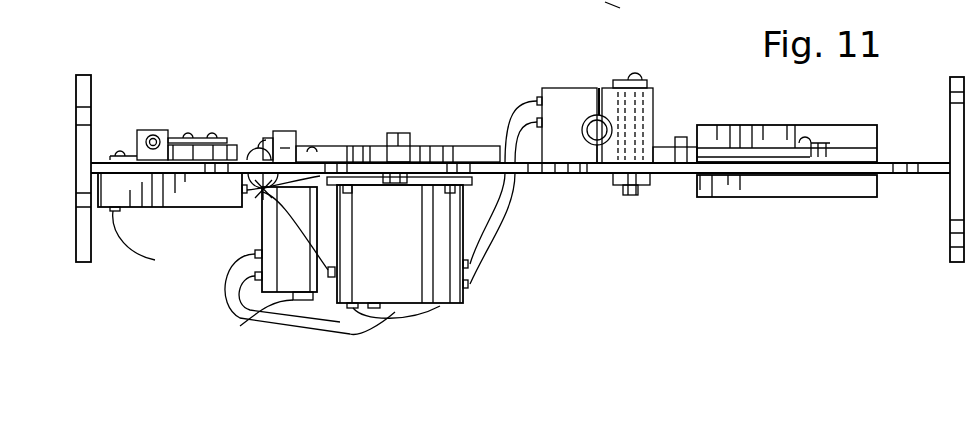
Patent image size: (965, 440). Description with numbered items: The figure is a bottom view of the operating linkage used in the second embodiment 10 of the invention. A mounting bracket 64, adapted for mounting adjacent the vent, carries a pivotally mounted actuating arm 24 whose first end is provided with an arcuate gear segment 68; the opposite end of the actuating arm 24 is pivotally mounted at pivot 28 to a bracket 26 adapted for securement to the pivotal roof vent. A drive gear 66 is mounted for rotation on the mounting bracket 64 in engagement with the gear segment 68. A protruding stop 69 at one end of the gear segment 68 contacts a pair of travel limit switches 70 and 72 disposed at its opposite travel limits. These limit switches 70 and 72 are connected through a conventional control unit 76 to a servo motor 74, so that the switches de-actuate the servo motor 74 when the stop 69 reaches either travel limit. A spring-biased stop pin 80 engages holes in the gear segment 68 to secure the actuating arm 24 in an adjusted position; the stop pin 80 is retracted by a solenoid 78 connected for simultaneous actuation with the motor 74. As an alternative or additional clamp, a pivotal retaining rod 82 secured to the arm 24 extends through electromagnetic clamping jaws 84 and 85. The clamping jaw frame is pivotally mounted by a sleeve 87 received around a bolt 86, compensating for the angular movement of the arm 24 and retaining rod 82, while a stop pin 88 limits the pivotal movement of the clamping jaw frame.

The second embodiment 10 is at (228, 70).
The actuating arm 24 is at (478, 150).
The bracket 26 is at (803, 190).
The pivot 28 is at (852, 135).
The mounting bracket 64 is at (555, 177).
The drive gear 66 is at (395, 132).
The arcuate gear segment 68 is at (247, 140).
The protruding stop 69 is at (205, 140).
The travel limit switch 70 is at (298, 137).
The travel limit switch 72 is at (130, 256).
The servo motor 74 is at (463, 305).
The control unit 76 is at (153, 210).
The solenoid 78 is at (270, 230).
The stop pin 80 is at (275, 310).
The retaining rod 82 is at (588, 177).
The electromagnetic clamping jaw 84 is at (650, 105).
The electromagnetic clamping jaw 85 is at (573, 95).
The bolt 86 is at (635, 76).
The sleeve 87 is at (648, 85).
The stop pin 88 is at (684, 177).